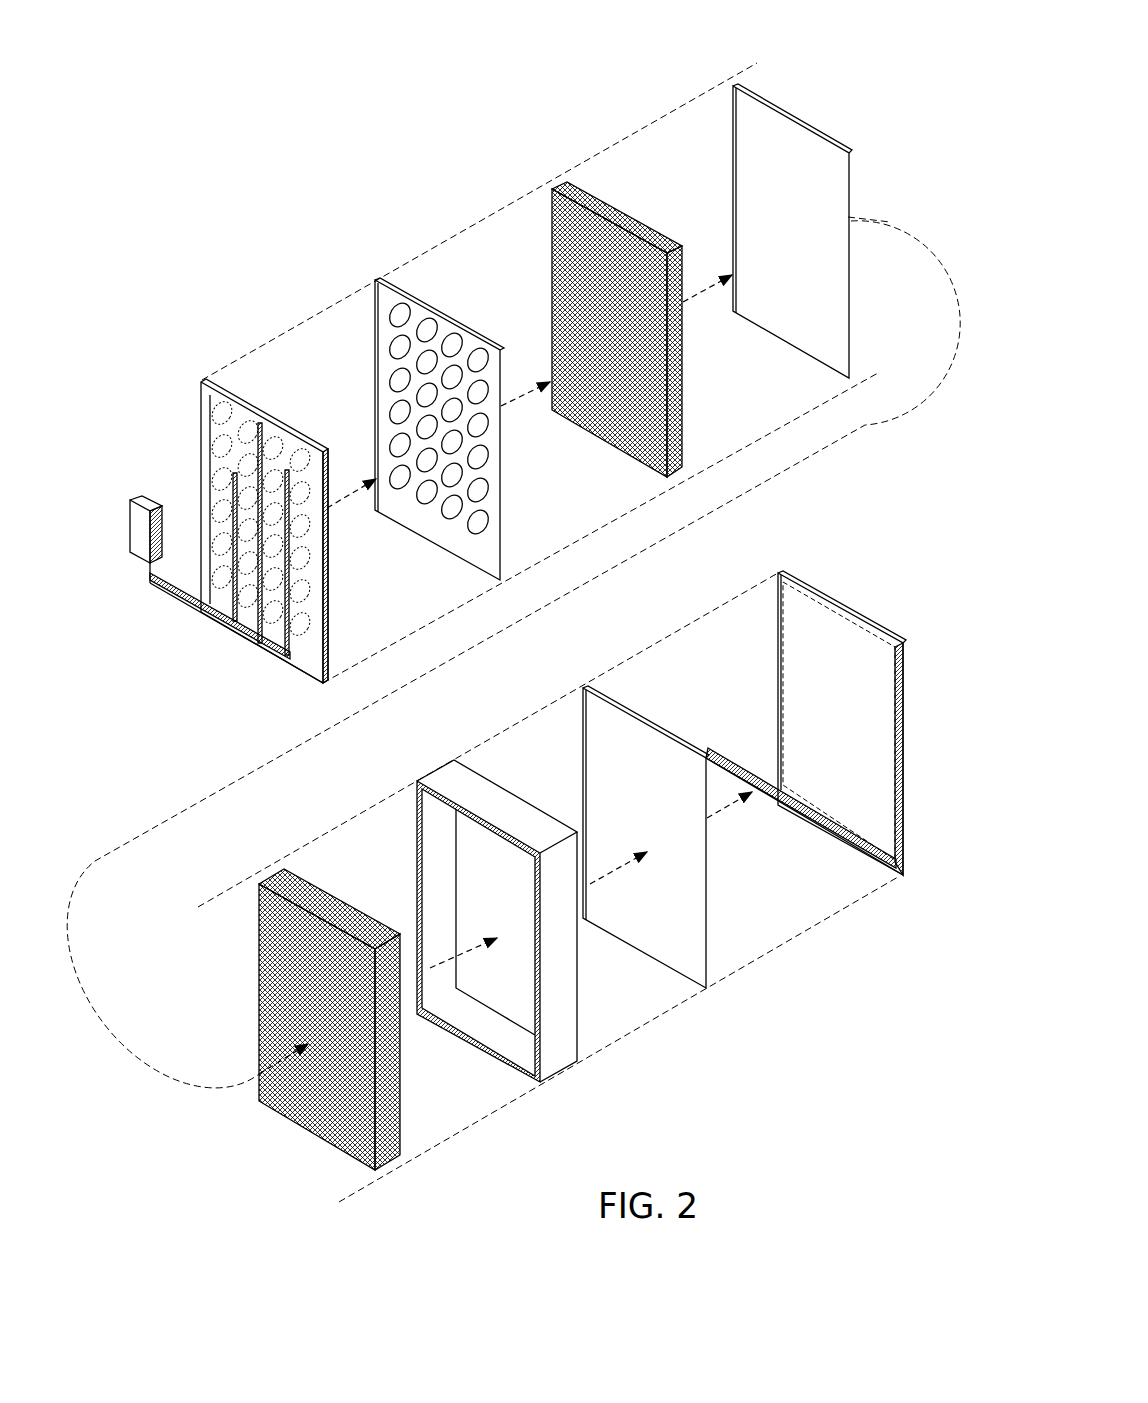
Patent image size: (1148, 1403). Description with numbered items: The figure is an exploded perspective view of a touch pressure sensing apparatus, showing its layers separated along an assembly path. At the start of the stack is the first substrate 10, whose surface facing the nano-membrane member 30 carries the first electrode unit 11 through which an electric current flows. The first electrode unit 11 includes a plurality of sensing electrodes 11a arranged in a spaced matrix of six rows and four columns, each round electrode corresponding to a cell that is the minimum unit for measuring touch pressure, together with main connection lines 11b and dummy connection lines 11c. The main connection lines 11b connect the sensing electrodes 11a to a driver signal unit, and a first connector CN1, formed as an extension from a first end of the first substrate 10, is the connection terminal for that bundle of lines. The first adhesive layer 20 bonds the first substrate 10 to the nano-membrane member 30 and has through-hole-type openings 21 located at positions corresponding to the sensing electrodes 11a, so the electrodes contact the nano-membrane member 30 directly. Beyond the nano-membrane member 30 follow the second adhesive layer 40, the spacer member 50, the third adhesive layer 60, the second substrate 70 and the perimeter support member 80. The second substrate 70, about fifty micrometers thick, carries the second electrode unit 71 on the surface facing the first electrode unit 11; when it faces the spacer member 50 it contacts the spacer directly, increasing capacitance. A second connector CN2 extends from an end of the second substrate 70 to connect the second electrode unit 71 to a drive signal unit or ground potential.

The first substrate 10 is at (203, 380).
The first electrode unit 11 is at (185, 513).
The sensing electrodes 11a is at (212, 415).
The main connection lines 11b is at (201, 552).
The dummy connection lines 11c is at (212, 442).
The first adhesive layer 20 is at (375, 280).
The openings 21 is at (402, 312).
The nano-membrane member 30 is at (553, 181).
The second adhesive layer 40 is at (737, 84).
The spacer member 50 is at (380, 1172).
The third adhesive layer 60 is at (706, 990).
The second substrate 70 is at (903, 878).
The second electrode unit 71 is at (906, 760).
The perimeter support member 80 is at (563, 1076).
The first connector CN1 is at (130, 525).
The second connector CN2 is at (715, 753).